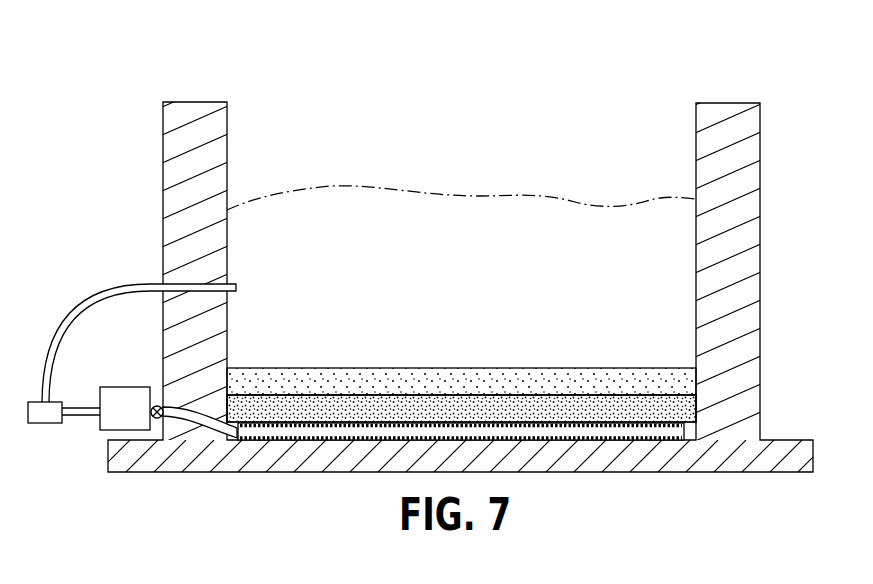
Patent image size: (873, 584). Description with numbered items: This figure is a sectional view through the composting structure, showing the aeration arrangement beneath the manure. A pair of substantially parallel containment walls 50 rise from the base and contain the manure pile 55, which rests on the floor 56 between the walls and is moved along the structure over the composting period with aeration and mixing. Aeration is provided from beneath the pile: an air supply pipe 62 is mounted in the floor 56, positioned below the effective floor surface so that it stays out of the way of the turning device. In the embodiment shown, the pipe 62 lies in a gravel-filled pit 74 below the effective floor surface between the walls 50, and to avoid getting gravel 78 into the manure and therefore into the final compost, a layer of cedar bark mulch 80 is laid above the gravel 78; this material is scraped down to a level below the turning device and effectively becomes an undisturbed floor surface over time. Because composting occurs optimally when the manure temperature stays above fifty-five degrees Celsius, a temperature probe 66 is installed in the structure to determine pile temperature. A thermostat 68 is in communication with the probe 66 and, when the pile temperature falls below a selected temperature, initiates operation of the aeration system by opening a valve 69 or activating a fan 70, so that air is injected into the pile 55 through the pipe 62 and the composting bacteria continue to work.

The containment wall 50 is at (190, 102).
The manure pile 55 is at (494, 197).
The floor 56 is at (440, 368).
The air supply pipe 62 is at (327, 432).
The temperature probe 66 is at (238, 287).
The thermostat 68 is at (42, 423).
The valve 69 is at (153, 406).
The fan 70 is at (107, 430).
The gravel-filled pit 74 is at (680, 405).
The gravel 78 is at (590, 405).
The cedar bark mulch 80 is at (580, 376).